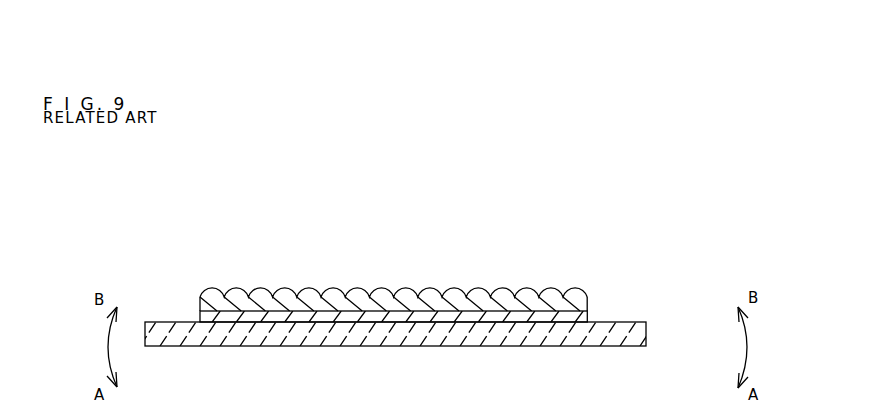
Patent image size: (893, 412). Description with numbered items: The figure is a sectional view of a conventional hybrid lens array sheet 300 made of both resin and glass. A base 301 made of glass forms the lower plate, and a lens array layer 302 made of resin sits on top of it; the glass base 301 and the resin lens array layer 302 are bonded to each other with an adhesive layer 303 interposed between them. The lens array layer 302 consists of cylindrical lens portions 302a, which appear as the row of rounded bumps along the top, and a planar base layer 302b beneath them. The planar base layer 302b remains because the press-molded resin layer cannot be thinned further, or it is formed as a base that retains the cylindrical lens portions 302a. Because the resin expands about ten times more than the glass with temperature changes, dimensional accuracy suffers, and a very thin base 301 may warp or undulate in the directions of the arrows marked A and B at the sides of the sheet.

The hybrid lens array sheet 300 is at (183, 280).
The base 301 is at (646, 338).
The lens array layer 302 is at (635, 223).
The cylindrical lens portions 302a is at (533, 293).
The planar base layer 302b is at (588, 303).
The adhesive layer 303 is at (588, 318).